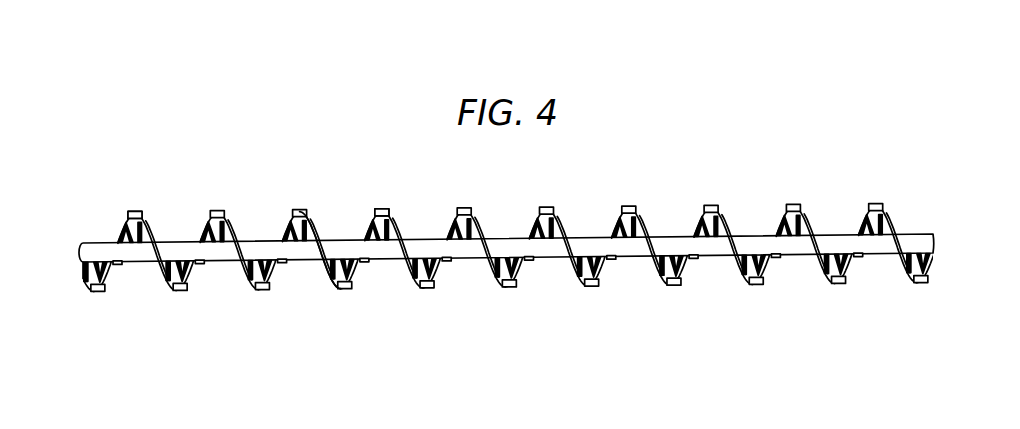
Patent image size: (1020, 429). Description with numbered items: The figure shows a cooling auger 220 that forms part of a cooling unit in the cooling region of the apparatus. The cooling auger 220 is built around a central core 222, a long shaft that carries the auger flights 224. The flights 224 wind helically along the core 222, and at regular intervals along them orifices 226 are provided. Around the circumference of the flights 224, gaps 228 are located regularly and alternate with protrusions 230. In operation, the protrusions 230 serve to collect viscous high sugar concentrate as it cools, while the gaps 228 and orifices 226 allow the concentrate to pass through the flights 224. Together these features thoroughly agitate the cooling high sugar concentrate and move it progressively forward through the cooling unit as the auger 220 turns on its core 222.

The cooling auger 220 is at (494, 259).
The central core 222 is at (253, 242).
The auger flights 224 is at (494, 230).
The orifices 226 is at (320, 237).
The gaps 228 is at (128, 218).
The protrusions 230 is at (385, 211).